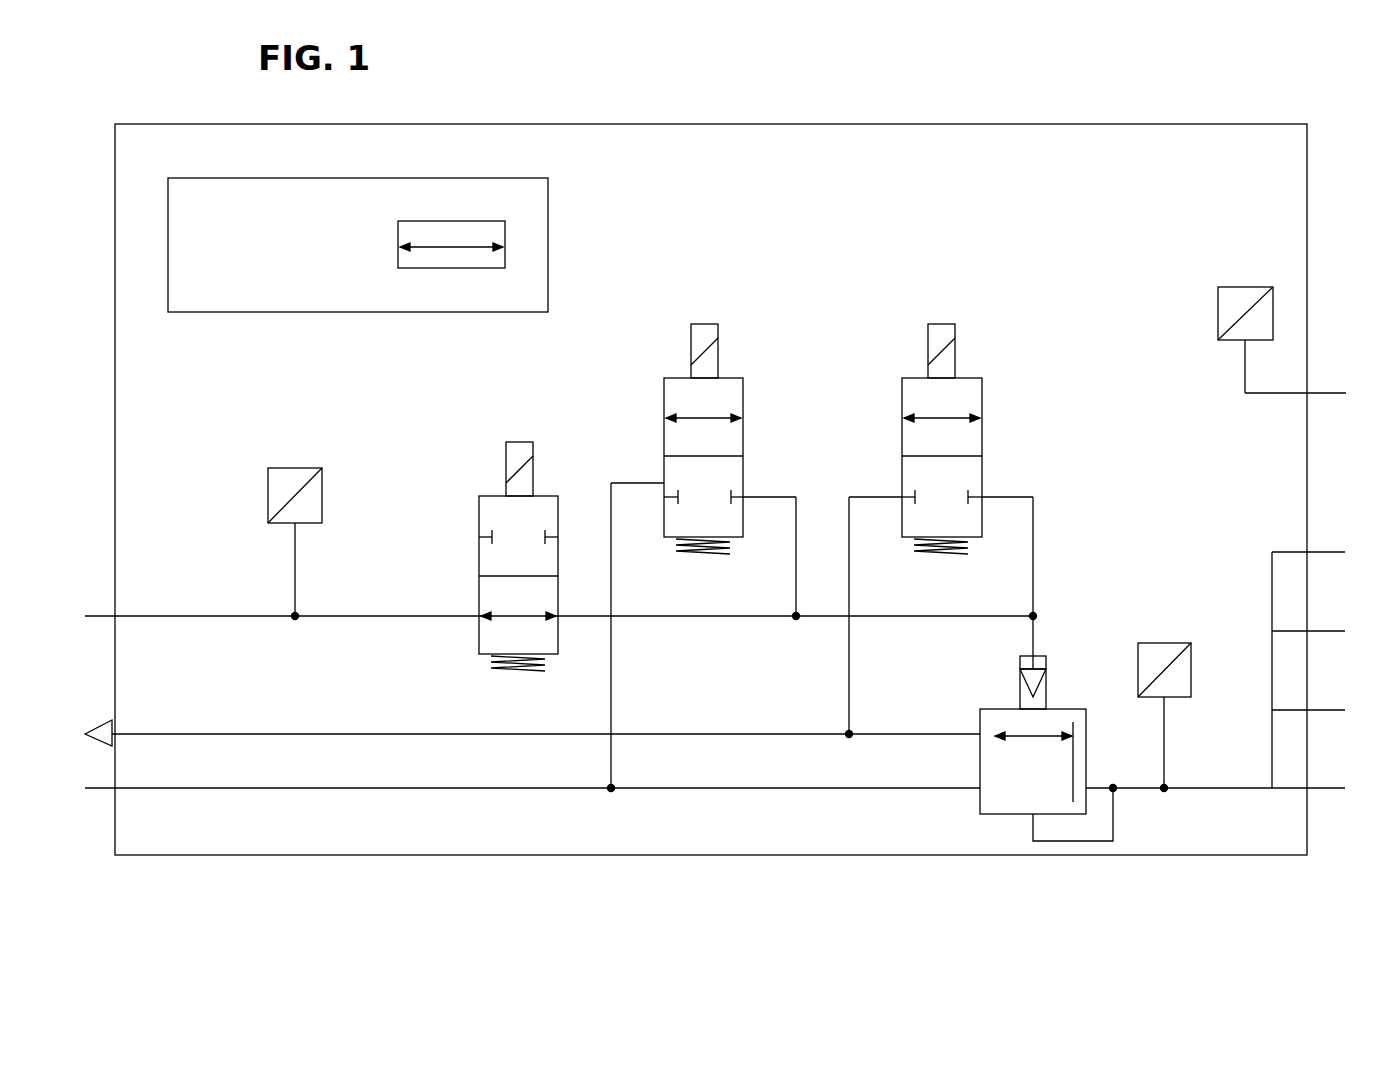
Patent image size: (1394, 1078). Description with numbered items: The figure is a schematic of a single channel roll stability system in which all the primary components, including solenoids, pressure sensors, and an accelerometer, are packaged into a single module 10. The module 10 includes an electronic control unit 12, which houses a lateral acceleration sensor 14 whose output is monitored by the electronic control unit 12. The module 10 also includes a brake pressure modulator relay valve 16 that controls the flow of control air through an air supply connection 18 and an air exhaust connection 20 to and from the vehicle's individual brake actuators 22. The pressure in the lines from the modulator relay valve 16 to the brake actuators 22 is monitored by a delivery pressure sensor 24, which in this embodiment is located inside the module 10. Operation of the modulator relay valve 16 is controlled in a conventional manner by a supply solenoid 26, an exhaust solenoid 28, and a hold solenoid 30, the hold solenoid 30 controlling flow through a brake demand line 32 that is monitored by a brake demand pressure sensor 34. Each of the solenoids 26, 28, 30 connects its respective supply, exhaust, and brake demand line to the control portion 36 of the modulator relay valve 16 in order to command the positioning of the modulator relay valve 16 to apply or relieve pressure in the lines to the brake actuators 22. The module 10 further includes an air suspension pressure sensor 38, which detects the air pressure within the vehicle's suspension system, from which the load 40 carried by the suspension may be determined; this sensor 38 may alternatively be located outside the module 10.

The module 10 is at (711, 465).
The electronic control unit 12 is at (358, 269).
The lateral acceleration sensor 14 is at (434, 244).
The brake pressure modulator relay valve 16 is at (1046, 775).
The air supply connection 18 is at (694, 788).
The air exhaust connection 20 is at (512, 733).
The brake actuators 22 is at (1327, 670).
The delivery pressure sensor 24 is at (1164, 691).
The supply solenoid 26 is at (702, 414).
The exhaust solenoid 28 is at (941, 414).
The hold solenoid 30 is at (518, 533).
The brake demand line 32 is at (540, 616).
The brake demand pressure sensor 34 is at (294, 518).
The control portion 36 is at (1053, 682).
The air suspension pressure sensor 38 is at (1239, 315).
The load 40 is at (1314, 393).